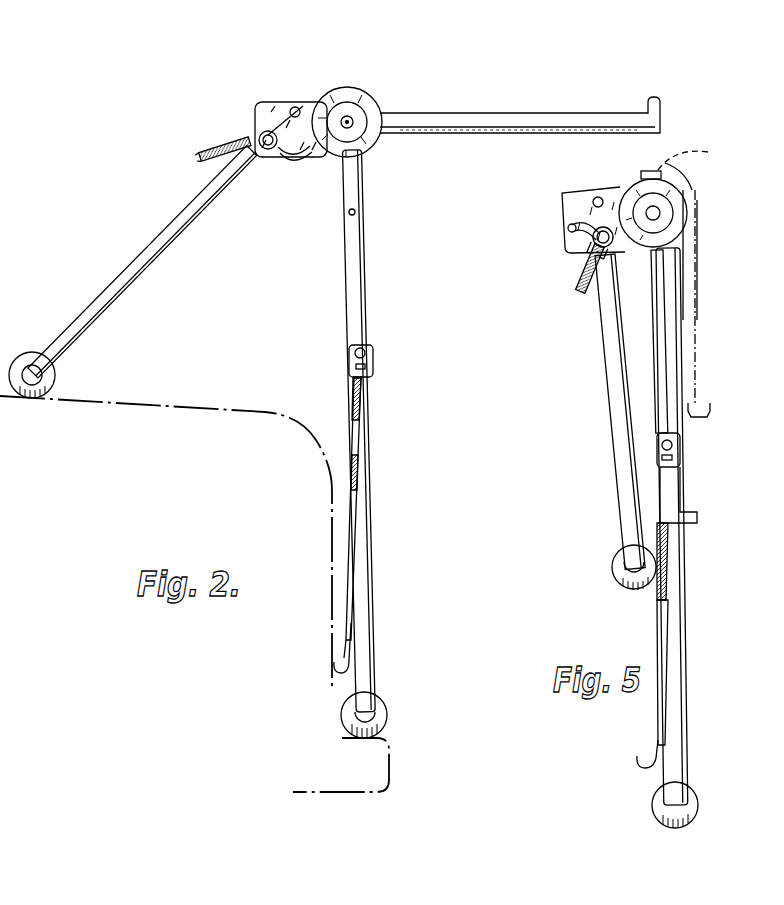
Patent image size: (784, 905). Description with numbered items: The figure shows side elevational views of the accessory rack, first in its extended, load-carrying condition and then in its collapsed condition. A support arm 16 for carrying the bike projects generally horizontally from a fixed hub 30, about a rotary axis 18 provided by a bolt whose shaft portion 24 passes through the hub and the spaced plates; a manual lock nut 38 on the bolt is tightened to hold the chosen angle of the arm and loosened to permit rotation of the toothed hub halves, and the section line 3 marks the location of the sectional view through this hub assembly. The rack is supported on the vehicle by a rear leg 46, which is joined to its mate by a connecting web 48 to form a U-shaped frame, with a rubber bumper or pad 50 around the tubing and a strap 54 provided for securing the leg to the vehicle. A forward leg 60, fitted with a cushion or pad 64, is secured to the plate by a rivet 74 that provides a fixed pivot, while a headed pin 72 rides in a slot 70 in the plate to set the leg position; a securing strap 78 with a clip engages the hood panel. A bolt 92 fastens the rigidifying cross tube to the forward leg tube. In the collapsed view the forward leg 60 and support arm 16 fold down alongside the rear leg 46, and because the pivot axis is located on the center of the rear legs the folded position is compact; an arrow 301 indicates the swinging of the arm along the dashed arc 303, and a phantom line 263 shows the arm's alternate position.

In FIG. 2, the section line 3 is at (221, 136).
In FIG. 2, the support arm 16 is at (579, 114).
In FIG. 5, the support arm 16 is at (653, 306).
In FIG. 2, the rotary axis 18 is at (266, 101).
In FIG. 5, the rotary axis 18 is at (562, 195).
In FIG. 5, the shaft portion 24 is at (600, 197).
In FIG. 2, the fixed hub 30 is at (373, 104).
In FIG. 5, the fixed hub 30 is at (686, 191).
In FIG. 2, the manual lock nut 38 is at (368, 137).
In FIG. 5, the manual lock nut 38 is at (663, 214).
In FIG. 2, the rear leg 46 is at (368, 255).
In FIG. 5, the rear leg 46 is at (681, 577).
In FIG. 2, the connecting web 48 is at (389, 720).
In FIG. 2, the rubber bumper or pad 50 is at (386, 705).
In FIG. 5, the rubber bumper or pad 50 is at (690, 788).
In FIG. 2, the strap 54 is at (360, 427).
In FIG. 5, the strap 54 is at (657, 613).
In FIG. 2, the forward leg 60 is at (166, 236).
In FIG. 5, the forward leg 60 is at (616, 403).
In FIG. 2, the cushion or pad 64 is at (32, 352).
In FIG. 5, the cushion or pad 64 is at (613, 563).
In FIG. 2, the slot 70 is at (298, 156).
In FIG. 5, the slot 70 is at (569, 232).
In FIG. 2, the headed pin 72 is at (268, 150).
In FIG. 5, the headed pin 72 is at (594, 246).
In FIG. 2, the rivet 74 is at (297, 107).
In FIG. 2, the securing strap 78 is at (200, 157).
In FIG. 5, the securing strap 78 is at (578, 288).
In FIG. 2, the bolt 92 is at (357, 212).
In FIG. 5, the rod 263 is at (697, 262).
In FIG. 5, the stop tab 301 is at (647, 161).
In FIG. 5, the arc of travel 303 is at (704, 159).